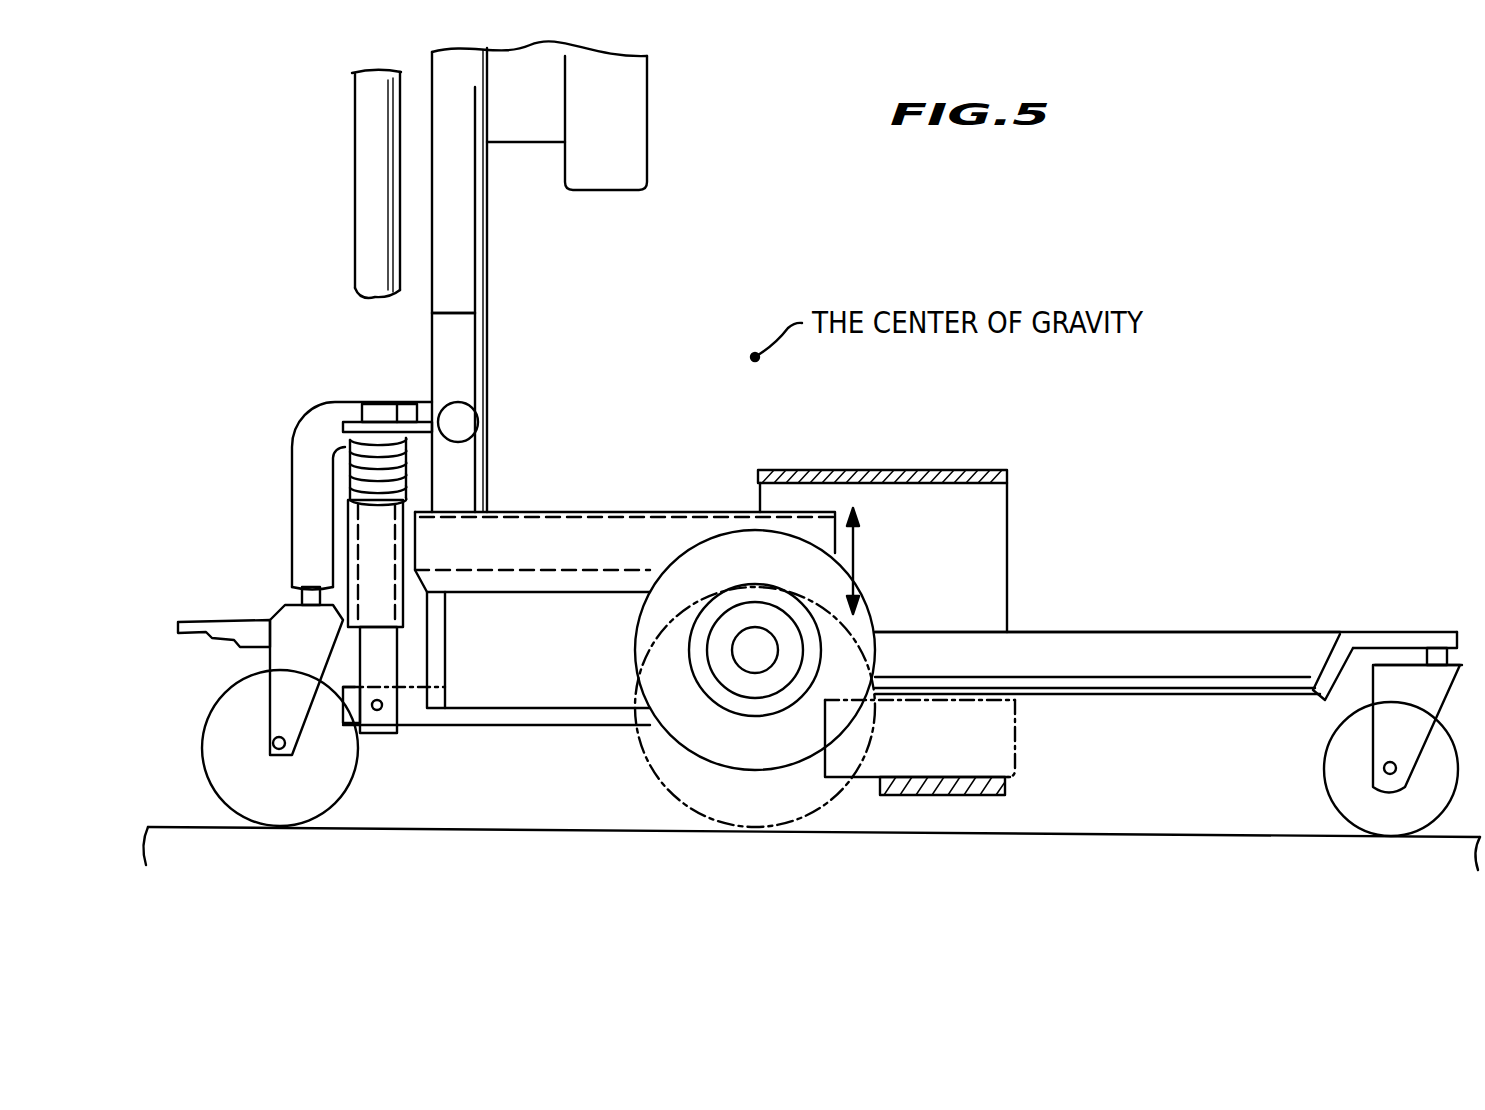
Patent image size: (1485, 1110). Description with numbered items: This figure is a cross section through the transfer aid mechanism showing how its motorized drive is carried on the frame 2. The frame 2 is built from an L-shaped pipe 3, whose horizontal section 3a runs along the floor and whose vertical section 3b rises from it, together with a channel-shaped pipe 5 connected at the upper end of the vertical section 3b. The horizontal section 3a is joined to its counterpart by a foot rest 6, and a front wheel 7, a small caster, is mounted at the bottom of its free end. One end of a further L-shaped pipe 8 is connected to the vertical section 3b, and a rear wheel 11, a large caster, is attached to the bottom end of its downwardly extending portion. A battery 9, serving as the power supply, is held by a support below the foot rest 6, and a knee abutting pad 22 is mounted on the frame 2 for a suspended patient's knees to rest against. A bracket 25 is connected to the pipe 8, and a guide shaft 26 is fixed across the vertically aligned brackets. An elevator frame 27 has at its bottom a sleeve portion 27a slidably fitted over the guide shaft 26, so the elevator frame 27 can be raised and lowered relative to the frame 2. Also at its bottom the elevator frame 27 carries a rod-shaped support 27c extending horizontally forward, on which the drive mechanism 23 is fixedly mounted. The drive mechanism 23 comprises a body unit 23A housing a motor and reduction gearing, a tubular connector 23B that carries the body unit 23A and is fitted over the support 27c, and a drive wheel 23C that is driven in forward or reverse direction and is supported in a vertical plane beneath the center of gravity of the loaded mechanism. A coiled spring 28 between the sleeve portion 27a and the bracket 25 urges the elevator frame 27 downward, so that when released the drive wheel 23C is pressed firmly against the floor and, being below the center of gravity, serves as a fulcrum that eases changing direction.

The frame 2 is at (1062, 603).
The L-shaped pipe 3 is at (1274, 618).
The horizontal section 3a is at (1167, 632).
The vertical section 3b is at (487, 360).
The channel-shaped pipe 5 is at (487, 262).
The foot rest 6 is at (950, 470).
The front wheel 7 is at (1358, 820).
The L-shaped pipe 8 is at (292, 448).
The battery 9 is at (1023, 750).
The rear wheel 11 is at (217, 702).
The knee abutting pad 22 is at (647, 118).
The drive mechanism 23 is at (656, 663).
The body unit 23A is at (503, 695).
The tubular connector 23B is at (632, 512).
The drive wheel 23C is at (740, 530).
The bracket 25 is at (418, 404).
The guide shaft 26 is at (362, 557).
The elevator frame 27 is at (340, 167).
The sleeve portion 27a is at (335, 518).
The rod-shaped support 27c is at (540, 512).
The coiled spring 28 is at (347, 447).